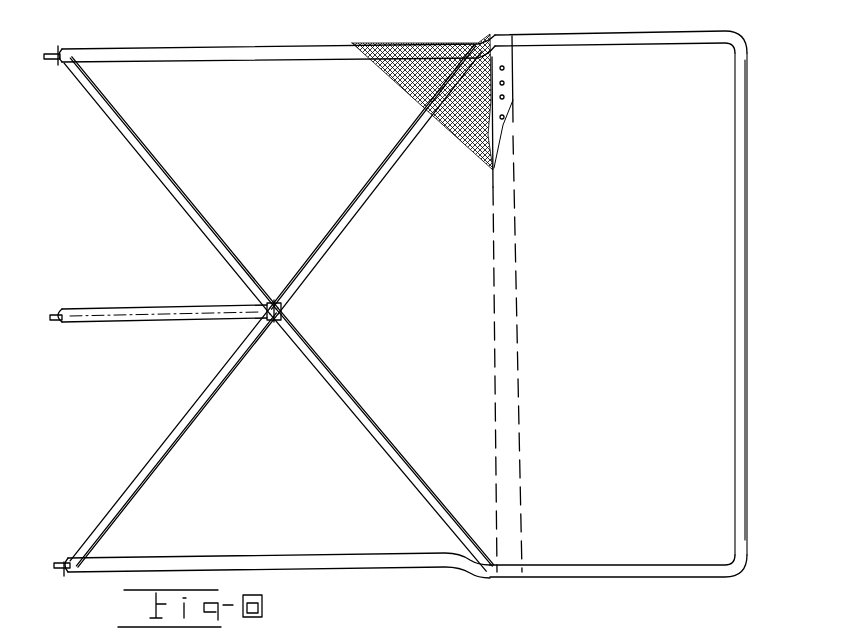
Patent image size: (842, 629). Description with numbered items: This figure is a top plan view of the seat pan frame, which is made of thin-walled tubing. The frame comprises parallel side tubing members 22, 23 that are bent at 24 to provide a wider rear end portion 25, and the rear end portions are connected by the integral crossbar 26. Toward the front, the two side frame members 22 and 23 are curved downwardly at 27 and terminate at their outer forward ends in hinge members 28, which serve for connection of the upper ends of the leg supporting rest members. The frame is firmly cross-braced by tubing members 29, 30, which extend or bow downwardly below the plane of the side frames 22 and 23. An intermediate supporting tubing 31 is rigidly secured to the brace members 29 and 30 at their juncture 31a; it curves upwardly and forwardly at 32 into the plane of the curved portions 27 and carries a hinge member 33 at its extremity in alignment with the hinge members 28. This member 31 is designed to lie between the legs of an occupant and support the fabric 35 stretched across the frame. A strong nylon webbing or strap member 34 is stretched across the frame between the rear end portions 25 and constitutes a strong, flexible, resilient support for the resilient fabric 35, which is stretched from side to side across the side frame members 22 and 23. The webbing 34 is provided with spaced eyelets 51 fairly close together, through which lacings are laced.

The side tubing member 22 is at (290, 63).
The side tubing member 23 is at (278, 556).
The bend 24 is at (494, 60).
The rear end portion 25 is at (655, 44).
The crossbar 26 is at (740, 444).
The curved portion 27 is at (88, 51).
The hinge member 28 is at (56, 62).
The cross-brace tubing member 29 is at (373, 186).
The cross-brace tubing member 30 is at (190, 222).
The intermediate supporting tubing 31 is at (160, 308).
The juncture 31a is at (282, 305).
The upward and forward curve 32 is at (92, 307).
The hinge member 33 is at (58, 313).
The webbing or strap member 34 is at (513, 96).
The fabric 35 is at (403, 85).
The eyelet 51 is at (518, 115).